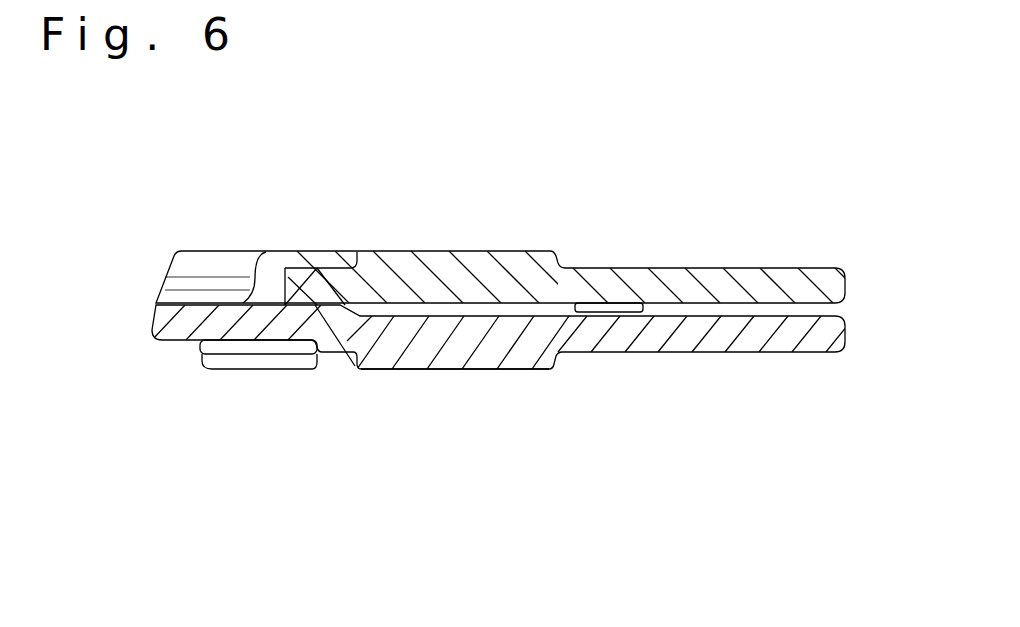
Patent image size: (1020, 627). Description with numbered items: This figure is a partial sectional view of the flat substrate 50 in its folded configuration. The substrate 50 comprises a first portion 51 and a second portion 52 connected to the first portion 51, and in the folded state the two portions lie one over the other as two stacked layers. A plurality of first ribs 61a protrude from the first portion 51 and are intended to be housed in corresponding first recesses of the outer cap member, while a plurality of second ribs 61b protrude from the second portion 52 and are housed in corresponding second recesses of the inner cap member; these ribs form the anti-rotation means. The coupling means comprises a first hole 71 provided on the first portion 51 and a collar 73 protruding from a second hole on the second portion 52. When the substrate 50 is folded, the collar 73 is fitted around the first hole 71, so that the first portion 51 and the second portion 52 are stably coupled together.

The substrate 50 is at (822, 237).
The first portion 51 is at (677, 282).
The second portion 52 is at (700, 338).
The first ribs 61a is at (441, 268).
The second ribs 61b is at (432, 353).
The first hole 71 is at (284, 282).
The collar 73 is at (272, 268).